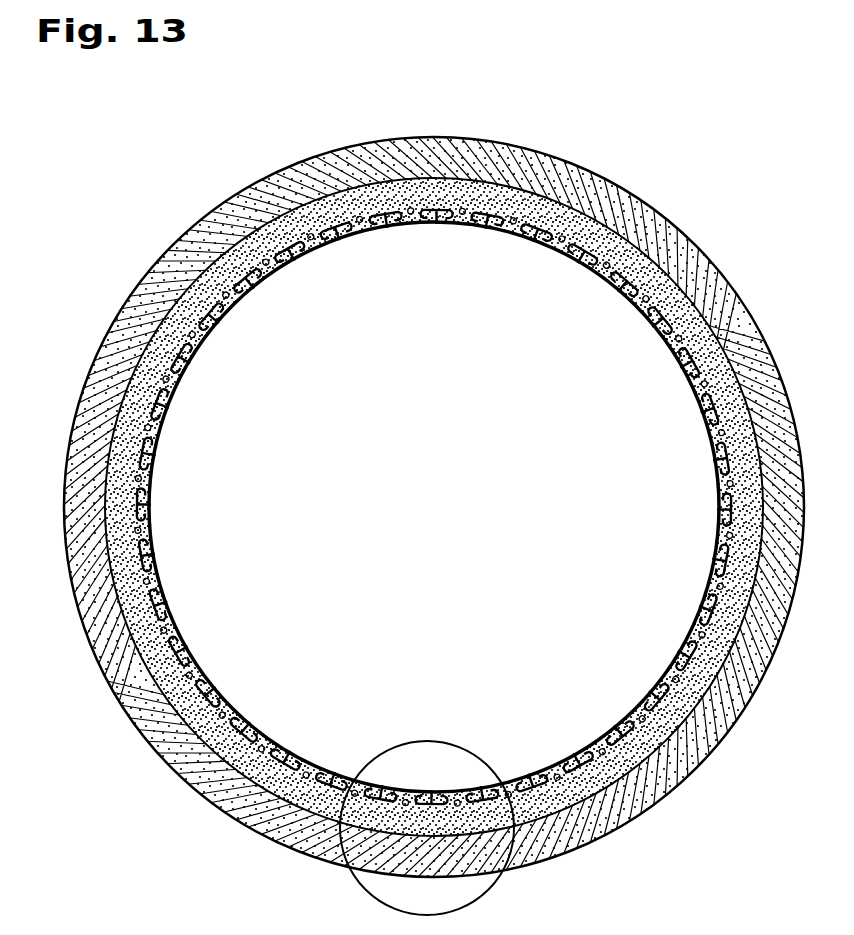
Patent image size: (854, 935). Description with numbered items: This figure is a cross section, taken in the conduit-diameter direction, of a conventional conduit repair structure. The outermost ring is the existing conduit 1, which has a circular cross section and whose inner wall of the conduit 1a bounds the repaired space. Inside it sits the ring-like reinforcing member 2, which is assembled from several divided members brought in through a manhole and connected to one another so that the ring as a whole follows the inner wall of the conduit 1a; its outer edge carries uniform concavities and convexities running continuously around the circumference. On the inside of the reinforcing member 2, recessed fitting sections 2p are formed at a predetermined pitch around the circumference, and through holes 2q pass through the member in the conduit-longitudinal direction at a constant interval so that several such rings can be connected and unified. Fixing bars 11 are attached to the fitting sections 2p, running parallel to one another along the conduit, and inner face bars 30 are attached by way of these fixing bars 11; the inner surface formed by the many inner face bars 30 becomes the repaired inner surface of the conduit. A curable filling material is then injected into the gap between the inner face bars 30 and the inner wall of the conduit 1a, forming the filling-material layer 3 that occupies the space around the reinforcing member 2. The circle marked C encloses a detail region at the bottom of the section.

The existing conduit 1 is at (650, 200).
The inner wall of the conduit 1a is at (568, 203).
The reinforcing member 2 is at (434, 435).
The fitting section 2p is at (436, 208).
The through hole 2q is at (285, 213).
The filling-material layer 3 is at (170, 262).
The fixing bar 11 is at (198, 348).
The inner face bar 30 is at (317, 257).
The detail region C is at (462, 742).